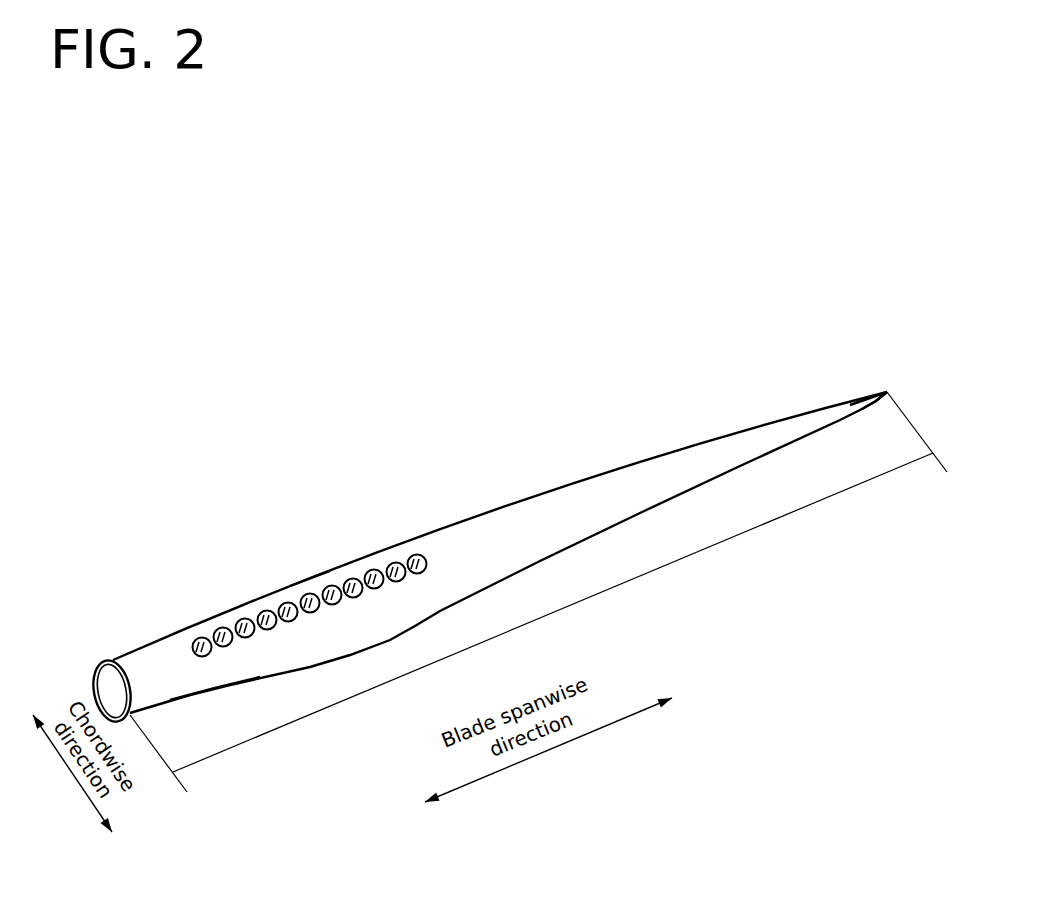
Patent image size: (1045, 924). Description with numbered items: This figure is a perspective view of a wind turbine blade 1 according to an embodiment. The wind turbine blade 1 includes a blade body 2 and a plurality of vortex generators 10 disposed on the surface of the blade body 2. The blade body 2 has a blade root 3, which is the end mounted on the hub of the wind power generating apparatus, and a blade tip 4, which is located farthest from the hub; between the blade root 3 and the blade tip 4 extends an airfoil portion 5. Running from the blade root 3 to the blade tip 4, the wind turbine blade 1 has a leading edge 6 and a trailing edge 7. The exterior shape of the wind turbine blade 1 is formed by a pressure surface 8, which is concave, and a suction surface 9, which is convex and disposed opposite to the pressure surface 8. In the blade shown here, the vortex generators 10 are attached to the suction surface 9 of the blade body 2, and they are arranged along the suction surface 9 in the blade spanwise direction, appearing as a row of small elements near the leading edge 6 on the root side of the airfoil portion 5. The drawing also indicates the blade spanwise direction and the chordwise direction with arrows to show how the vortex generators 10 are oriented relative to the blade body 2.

The wind turbine blade 1 is at (246, 475).
The blade body 2 is at (525, 498).
The blade root 3 is at (97, 668).
The blade tip 4 is at (885, 390).
The airfoil portion 5 is at (307, 579).
The leading edge 6 is at (464, 521).
The trailing edge 7 is at (521, 574).
The pressure surface 8 is at (190, 668).
The suction surface 9 is at (228, 660).
The vortex generators 10 is at (222, 627).